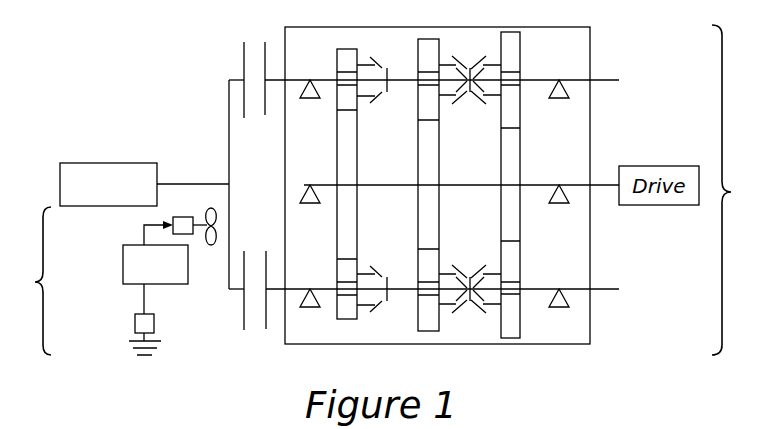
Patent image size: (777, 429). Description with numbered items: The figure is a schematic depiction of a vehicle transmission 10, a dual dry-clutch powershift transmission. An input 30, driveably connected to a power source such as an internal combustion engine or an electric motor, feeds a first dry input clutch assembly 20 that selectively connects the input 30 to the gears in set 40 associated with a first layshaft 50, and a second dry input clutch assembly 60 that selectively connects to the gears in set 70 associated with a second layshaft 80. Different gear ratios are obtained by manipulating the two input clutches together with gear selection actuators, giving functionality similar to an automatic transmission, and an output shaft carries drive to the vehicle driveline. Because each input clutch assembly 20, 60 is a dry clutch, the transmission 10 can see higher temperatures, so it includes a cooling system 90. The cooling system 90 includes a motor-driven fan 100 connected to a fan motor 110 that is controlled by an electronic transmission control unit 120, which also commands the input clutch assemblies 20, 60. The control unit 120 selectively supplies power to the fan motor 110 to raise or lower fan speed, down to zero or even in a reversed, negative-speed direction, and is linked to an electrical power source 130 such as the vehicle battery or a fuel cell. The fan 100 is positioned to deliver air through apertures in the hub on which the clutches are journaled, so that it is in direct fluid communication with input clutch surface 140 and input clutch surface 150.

The vehicle transmission 10 is at (737, 190).
The first dry input clutch assembly 20 is at (239, 290).
The input 30 is at (192, 183).
The gear set 40 is at (442, 191).
The first layshaft 50 is at (268, 292).
The second dry input clutch assembly 60 is at (244, 84).
The gear set 70 is at (396, 46).
The second layshaft 80 is at (275, 73).
The cooling system 90 is at (115, 281).
The motor-driven fan 100 is at (213, 246).
The fan motor 110 is at (173, 217).
The transmission control unit 120 is at (123, 278).
The electrical power source 130 is at (135, 330).
The input clutch surface 140 is at (247, 262).
The input clutch surface 150 is at (245, 107).